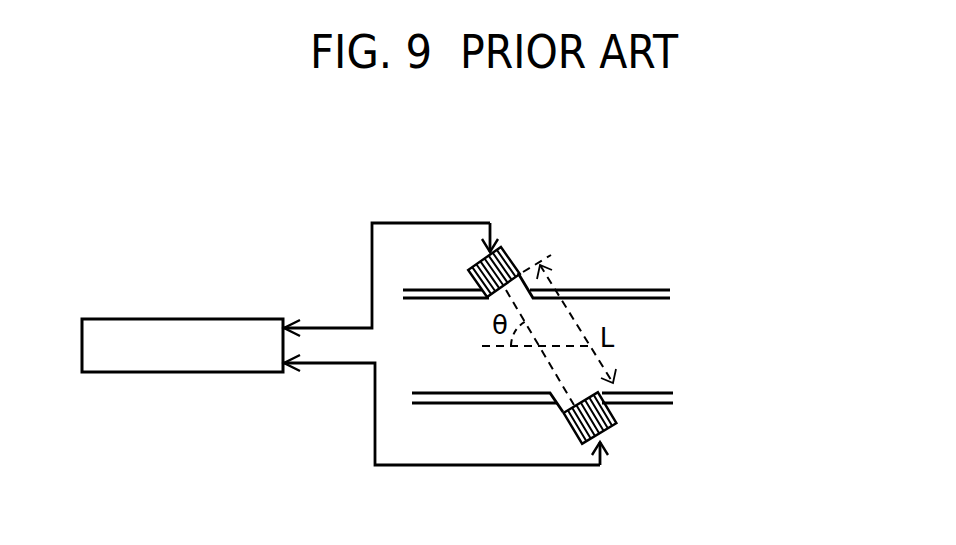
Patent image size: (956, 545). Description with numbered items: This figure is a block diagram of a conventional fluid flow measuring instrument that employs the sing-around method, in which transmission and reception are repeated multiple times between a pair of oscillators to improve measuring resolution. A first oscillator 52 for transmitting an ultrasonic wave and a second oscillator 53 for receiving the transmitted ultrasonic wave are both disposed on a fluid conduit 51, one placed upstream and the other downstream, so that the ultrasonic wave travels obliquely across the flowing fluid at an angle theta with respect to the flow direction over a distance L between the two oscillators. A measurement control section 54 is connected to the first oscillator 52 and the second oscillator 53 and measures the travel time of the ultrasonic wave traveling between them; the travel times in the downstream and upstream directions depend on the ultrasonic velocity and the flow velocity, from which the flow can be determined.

The fluid conduit 51 is at (623, 288).
The first oscillator 52 is at (512, 262).
The second oscillator 53 is at (613, 425).
The measurement control section 54 is at (207, 317).